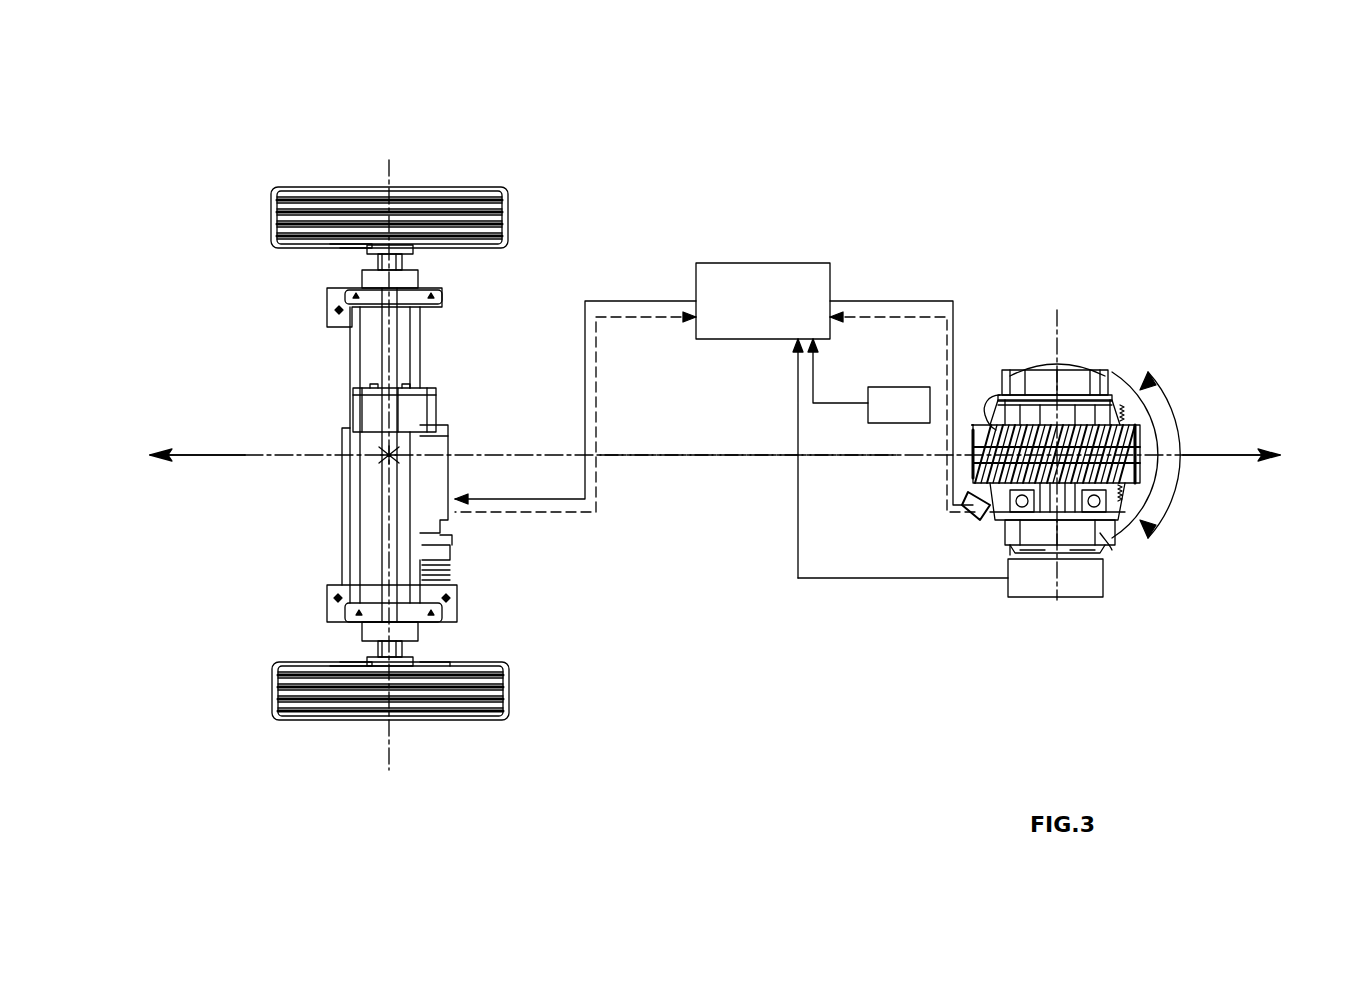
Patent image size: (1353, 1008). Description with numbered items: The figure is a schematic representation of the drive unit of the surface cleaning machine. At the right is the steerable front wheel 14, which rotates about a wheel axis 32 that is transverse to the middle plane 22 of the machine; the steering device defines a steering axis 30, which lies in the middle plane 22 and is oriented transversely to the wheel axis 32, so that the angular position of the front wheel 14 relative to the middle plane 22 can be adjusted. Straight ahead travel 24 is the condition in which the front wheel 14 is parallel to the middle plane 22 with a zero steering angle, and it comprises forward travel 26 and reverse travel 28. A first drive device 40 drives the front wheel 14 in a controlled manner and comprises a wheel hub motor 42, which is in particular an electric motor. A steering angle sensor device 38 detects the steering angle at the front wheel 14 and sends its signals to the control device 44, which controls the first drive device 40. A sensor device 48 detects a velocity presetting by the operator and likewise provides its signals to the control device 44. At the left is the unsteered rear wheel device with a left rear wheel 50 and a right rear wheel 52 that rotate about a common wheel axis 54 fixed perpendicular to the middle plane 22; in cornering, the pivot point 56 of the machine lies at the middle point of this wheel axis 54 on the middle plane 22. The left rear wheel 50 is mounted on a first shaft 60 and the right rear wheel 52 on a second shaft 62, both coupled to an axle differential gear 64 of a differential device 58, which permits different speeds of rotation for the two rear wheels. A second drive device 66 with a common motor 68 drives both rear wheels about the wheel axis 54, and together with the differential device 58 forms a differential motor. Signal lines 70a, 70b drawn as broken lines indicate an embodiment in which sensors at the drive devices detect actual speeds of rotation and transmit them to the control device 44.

The front wheel 14 is at (1018, 400).
The middle plane 22 is at (712, 458).
The straight ahead travel 24 is at (210, 455).
The forward travel 26 is at (1222, 455).
The reverse travel 28 is at (222, 455).
The steering axis 30 is at (1116, 376).
The wheel axis 32 is at (1062, 325).
The steering angle sensor device 38 is at (1037, 580).
The first drive device 40 is at (1120, 536).
The wheel hub motor 42 is at (1010, 545).
The control device 44 is at (762, 275).
The sensor device 48 is at (915, 405).
The left rear wheel 50 is at (400, 212).
The right rear wheel 52 is at (425, 690).
The wheel axis 54 is at (389, 757).
The pivot point 56 is at (385, 455).
The differential device 58 is at (368, 362).
The first shaft 60 is at (418, 264).
The second shaft 62 is at (405, 648).
The axle differential gear 64 is at (412, 405).
The second drive device 66 is at (438, 490).
The common motor 68 is at (440, 558).
The signal line 70a is at (550, 512).
The signal line 70b is at (866, 318).